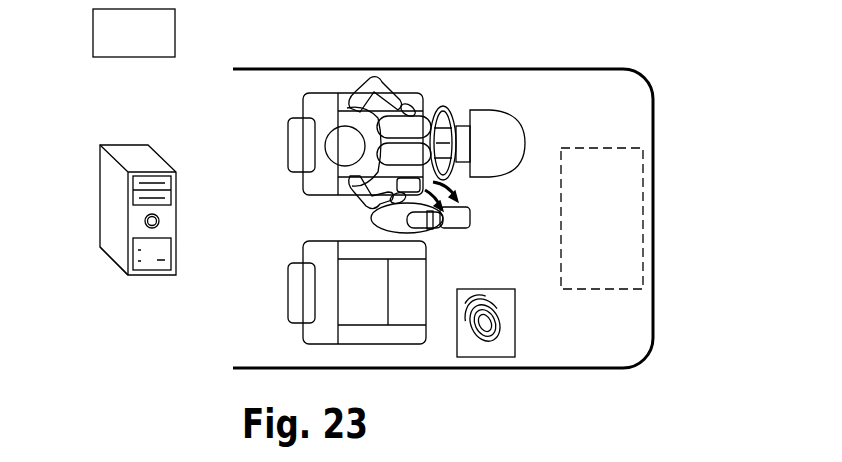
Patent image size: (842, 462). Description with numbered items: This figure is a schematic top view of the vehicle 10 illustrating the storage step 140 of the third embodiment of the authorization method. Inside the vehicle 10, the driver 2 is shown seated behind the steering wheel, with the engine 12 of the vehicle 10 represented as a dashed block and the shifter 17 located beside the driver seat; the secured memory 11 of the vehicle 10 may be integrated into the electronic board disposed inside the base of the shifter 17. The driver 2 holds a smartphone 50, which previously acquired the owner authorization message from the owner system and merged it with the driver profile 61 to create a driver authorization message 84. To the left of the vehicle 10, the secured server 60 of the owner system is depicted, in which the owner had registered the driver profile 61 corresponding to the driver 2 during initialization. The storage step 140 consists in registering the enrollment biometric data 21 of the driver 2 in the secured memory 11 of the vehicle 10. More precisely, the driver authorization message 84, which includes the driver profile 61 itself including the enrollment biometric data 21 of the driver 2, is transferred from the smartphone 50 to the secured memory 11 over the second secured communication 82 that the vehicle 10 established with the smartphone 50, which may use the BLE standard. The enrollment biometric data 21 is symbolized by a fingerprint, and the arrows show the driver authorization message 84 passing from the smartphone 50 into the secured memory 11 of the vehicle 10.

The driver 2 is at (397, 85).
The vehicle 10 is at (665, 72).
The secured memory 11 is at (469, 224).
The engine 12 is at (590, 222).
The shifter 17 is at (446, 237).
The enrollment biometric data 21 is at (482, 356).
The smartphone 50 is at (410, 185).
The secured server 60 is at (112, 202).
The driver profile 61 is at (140, 290).
The second secured communication 82 is at (372, 216).
The driver authorization message 84 is at (460, 182).
The storage step 140 is at (154, 45).